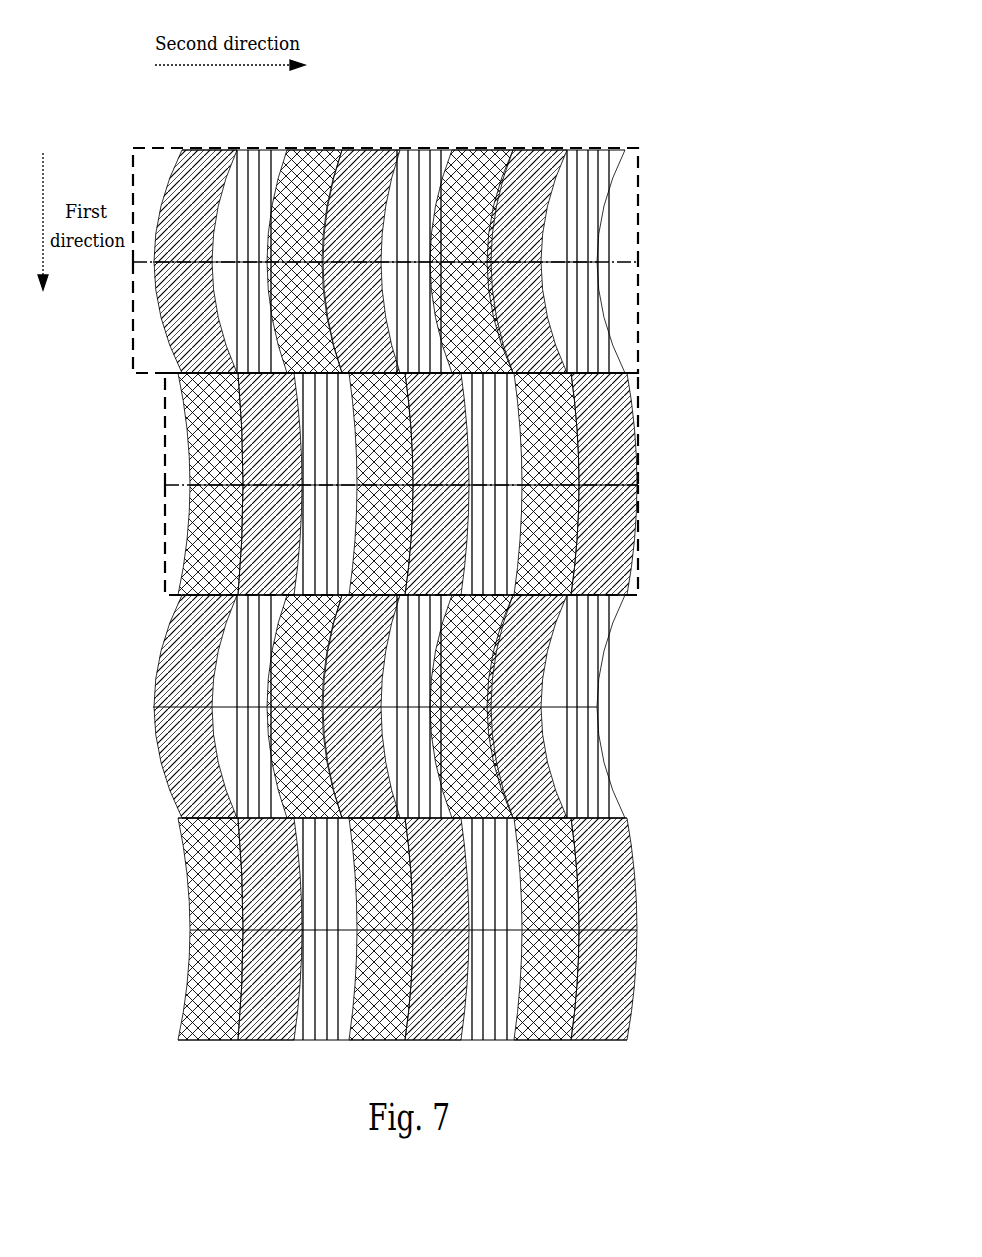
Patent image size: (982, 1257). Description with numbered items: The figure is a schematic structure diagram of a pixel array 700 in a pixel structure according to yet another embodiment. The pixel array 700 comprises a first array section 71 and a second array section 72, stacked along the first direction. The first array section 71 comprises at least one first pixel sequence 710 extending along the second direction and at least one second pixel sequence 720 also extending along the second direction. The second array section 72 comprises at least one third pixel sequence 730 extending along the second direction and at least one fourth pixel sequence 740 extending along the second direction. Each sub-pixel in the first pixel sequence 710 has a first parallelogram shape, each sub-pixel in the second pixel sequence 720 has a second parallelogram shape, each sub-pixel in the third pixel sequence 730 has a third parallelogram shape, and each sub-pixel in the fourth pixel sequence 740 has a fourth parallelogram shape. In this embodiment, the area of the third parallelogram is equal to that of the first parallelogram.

The pixel array 700 is at (476, 522).
The first array section 71 is at (474, 260).
The first pixel sequence 710 is at (638, 218).
The second pixel sequence 720 is at (638, 315).
The second array section 72 is at (492, 479).
The third pixel sequence 730 is at (638, 430).
The fourth pixel sequence 740 is at (638, 535).